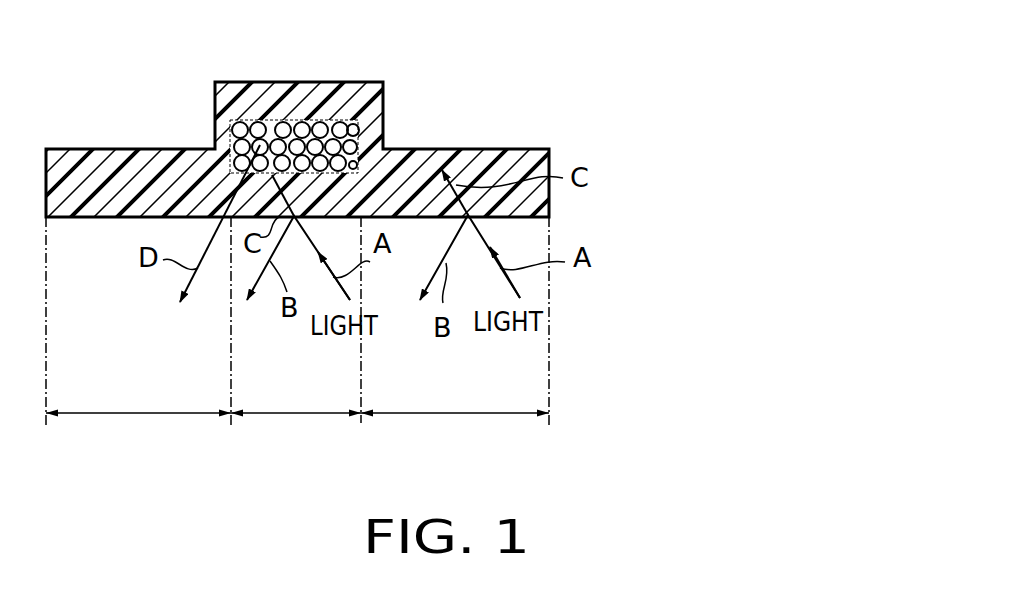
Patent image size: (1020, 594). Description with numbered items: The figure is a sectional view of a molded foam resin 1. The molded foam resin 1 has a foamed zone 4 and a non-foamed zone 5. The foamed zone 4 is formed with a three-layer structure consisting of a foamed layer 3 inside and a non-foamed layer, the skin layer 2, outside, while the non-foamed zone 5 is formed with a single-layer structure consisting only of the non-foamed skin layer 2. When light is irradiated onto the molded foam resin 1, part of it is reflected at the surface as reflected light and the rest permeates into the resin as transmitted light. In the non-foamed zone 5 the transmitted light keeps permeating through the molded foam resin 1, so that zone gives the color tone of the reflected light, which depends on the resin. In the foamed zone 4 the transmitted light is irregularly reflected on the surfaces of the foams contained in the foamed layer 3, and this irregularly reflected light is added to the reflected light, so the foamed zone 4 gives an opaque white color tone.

The molded foam resin 1 is at (390, 64).
The skin layer 2 is at (412, 158).
The foamed layer 3 is at (247, 137).
The foamed zone 4 is at (293, 415).
The non-foamed zone 5 is at (112, 417).